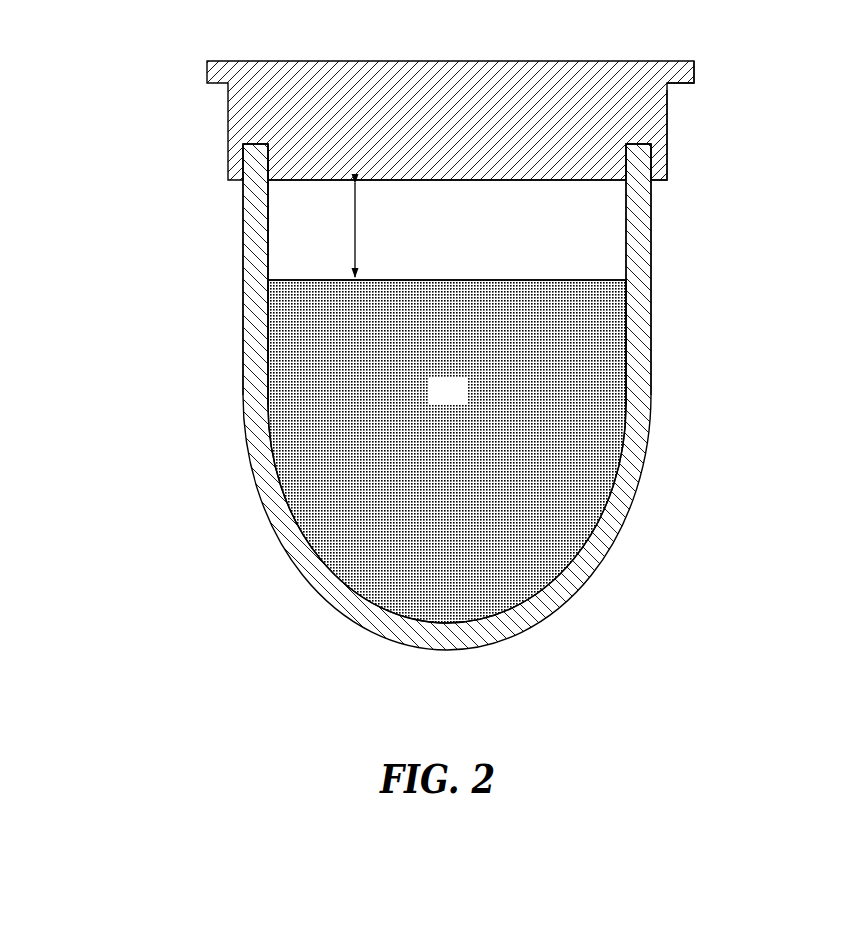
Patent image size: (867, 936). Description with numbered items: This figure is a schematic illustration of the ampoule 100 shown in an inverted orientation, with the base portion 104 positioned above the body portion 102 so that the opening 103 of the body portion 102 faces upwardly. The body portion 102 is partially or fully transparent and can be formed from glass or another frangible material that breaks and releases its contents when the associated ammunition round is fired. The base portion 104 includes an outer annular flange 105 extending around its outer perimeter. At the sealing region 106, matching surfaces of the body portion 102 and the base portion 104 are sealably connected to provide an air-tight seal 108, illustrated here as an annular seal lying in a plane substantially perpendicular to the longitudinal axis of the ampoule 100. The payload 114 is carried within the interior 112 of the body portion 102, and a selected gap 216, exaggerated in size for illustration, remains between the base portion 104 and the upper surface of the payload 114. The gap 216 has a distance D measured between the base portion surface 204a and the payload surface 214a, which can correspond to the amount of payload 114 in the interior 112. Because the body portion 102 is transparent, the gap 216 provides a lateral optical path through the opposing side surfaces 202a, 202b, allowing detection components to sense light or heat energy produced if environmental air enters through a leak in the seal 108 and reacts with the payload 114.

The ampoule 100 is at (410, 327).
The body portion 102 is at (430, 397).
The opening 103 is at (305, 142).
The base portion 104 is at (460, 116).
The outer annular flange 105 is at (695, 68).
The sealing region 106 is at (688, 161).
The seal 108 is at (256, 155).
The interior 112 is at (505, 428).
The payload 114 is at (461, 401).
The first side surface 202a is at (202, 274).
The second side surface 202b is at (651, 235).
The base portion surface 204a is at (513, 185).
The payload surface 214a is at (546, 276).
The gap 216 is at (262, 250).